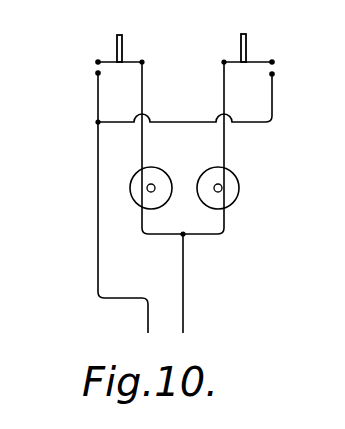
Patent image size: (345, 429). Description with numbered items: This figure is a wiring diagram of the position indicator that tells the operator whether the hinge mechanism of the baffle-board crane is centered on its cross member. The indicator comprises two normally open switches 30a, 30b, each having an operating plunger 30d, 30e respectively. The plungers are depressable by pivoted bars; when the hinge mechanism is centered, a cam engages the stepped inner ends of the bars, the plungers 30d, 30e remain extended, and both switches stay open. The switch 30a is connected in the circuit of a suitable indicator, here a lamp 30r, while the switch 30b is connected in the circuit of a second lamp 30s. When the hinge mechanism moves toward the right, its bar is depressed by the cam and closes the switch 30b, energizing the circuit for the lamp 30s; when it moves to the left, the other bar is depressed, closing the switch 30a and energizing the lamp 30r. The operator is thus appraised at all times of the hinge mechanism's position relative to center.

The normally open switch 30a is at (90, 67).
The normally open switch 30b is at (277, 69).
The operating plunger 30d is at (120, 48).
The operating plunger 30e is at (244, 47).
The lamp 30r is at (155, 177).
The lamp 30s is at (231, 189).